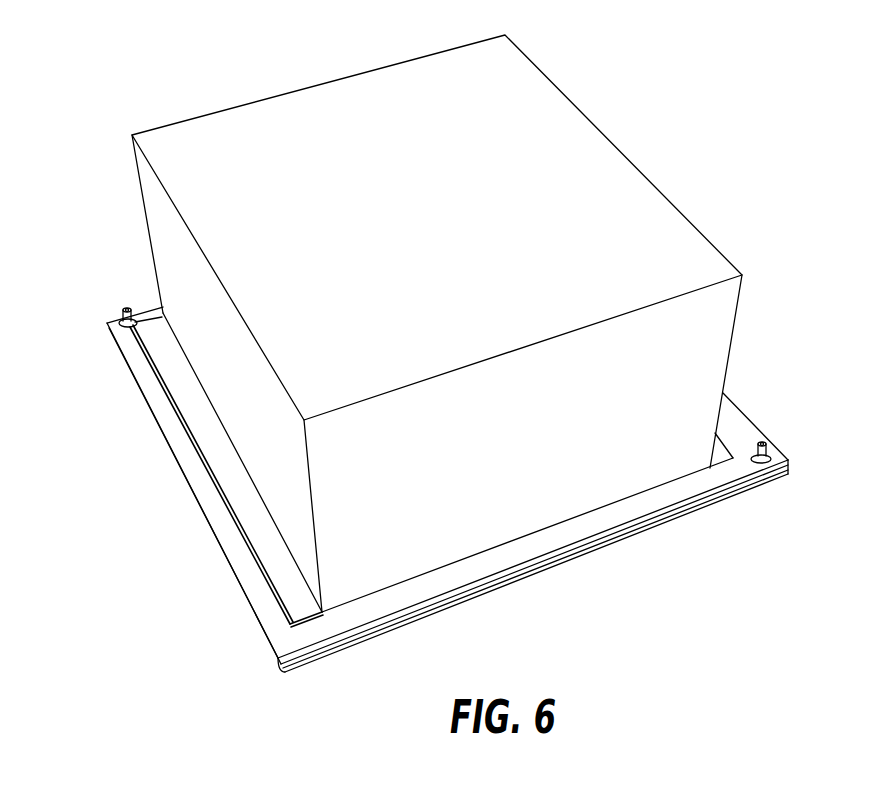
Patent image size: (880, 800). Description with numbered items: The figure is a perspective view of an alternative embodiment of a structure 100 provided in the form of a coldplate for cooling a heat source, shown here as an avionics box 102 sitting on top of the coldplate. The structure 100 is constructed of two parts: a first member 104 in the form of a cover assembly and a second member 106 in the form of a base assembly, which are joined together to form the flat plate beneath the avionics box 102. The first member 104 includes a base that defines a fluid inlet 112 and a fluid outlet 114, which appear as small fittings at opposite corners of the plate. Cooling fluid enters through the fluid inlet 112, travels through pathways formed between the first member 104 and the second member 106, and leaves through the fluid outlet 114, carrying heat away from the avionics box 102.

The structure 100 is at (714, 518).
The avionics box 102 is at (633, 193).
The first member 104 is at (244, 567).
The second member 106 is at (283, 675).
The fluid inlet 112 is at (763, 442).
The fluid outlet 114 is at (127, 306).